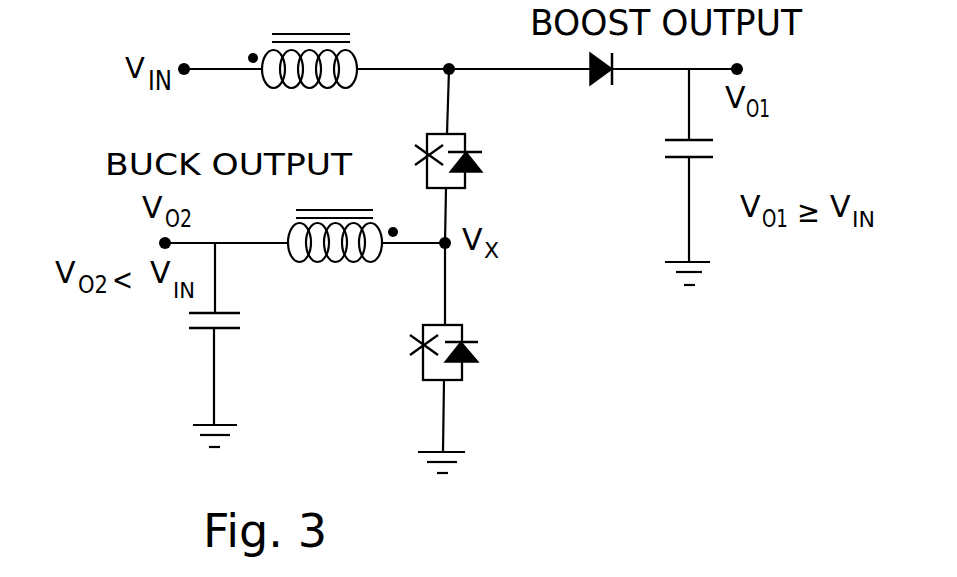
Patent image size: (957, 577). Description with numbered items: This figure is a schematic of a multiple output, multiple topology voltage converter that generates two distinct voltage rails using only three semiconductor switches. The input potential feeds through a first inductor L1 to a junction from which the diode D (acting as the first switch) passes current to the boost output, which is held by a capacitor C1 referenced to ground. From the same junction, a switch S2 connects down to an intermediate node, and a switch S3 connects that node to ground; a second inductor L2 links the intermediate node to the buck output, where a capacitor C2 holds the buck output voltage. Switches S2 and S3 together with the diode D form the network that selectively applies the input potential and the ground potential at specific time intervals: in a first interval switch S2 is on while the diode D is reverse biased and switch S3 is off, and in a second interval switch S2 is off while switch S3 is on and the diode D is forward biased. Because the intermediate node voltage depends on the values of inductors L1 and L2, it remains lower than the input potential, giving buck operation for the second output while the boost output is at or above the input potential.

The inductor L1 is at (309, 82).
The inductor L2 is at (335, 258).
The diode D is at (623, 89).
The capacitor C1 is at (667, 157).
The capacitor C2 is at (237, 344).
The switch S2 is at (476, 161).
The switch S3 is at (474, 353).